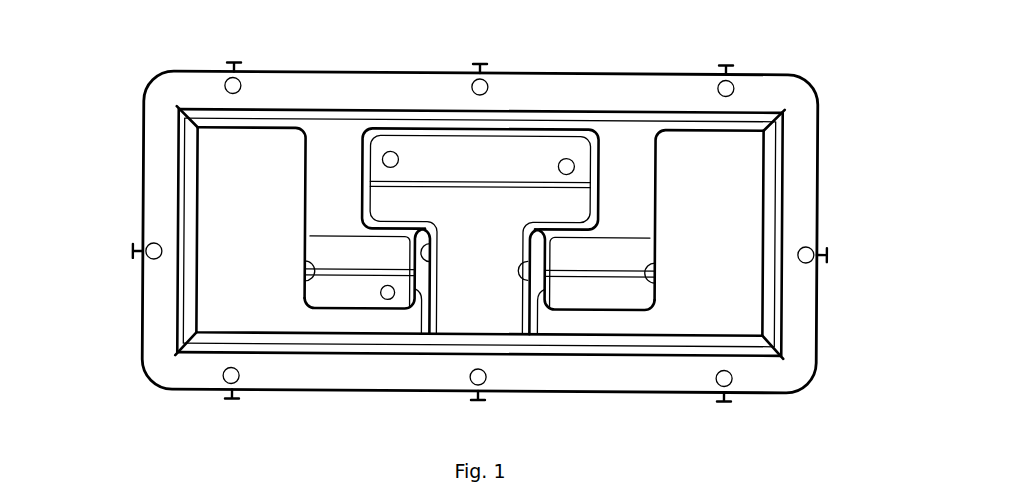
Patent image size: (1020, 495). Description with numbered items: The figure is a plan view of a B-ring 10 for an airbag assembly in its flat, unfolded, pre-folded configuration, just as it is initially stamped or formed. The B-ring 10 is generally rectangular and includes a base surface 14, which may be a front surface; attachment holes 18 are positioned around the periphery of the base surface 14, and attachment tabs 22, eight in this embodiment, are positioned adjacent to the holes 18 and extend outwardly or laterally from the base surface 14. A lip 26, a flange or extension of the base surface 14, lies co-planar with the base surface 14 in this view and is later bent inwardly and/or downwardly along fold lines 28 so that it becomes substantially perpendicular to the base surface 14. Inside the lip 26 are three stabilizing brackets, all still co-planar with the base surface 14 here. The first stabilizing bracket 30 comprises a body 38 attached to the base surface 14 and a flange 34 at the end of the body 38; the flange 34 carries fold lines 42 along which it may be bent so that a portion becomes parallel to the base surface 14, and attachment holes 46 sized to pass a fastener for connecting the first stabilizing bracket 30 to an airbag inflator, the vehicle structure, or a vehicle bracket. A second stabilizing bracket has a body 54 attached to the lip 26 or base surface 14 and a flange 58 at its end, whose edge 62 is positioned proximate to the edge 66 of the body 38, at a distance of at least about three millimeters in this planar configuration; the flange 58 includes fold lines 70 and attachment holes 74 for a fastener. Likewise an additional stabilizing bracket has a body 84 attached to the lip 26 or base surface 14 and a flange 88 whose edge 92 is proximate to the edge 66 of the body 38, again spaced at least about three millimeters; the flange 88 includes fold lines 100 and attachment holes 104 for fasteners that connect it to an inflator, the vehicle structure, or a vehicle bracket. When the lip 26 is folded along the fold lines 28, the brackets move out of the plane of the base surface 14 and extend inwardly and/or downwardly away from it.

The B-ring 10 is at (826, 170).
The base surface 14 is at (803, 140).
The attachment holes 18 is at (241, 87).
The attachment tabs 22 is at (235, 62).
The lip 26 is at (232, 130).
The fold lines 28 is at (483, 240).
The first stabilizing bracket 30 is at (466, 262).
The flange 34 is at (468, 170).
The body 38 is at (453, 348).
The fold lines 42 is at (576, 184).
The attachment holes 46 is at (393, 152).
The body 54 is at (610, 202).
The flange 58 is at (611, 305).
The edge 62 is at (541, 300).
The edge 66 is at (433, 253).
The fold lines 70 is at (646, 270).
The attachment holes 74 is at (596, 345).
The body 84 is at (324, 202).
The flange 88 is at (328, 305).
The edge 92 is at (410, 308).
The fold lines 100 is at (302, 279).
The attachment holes 104 is at (383, 299).